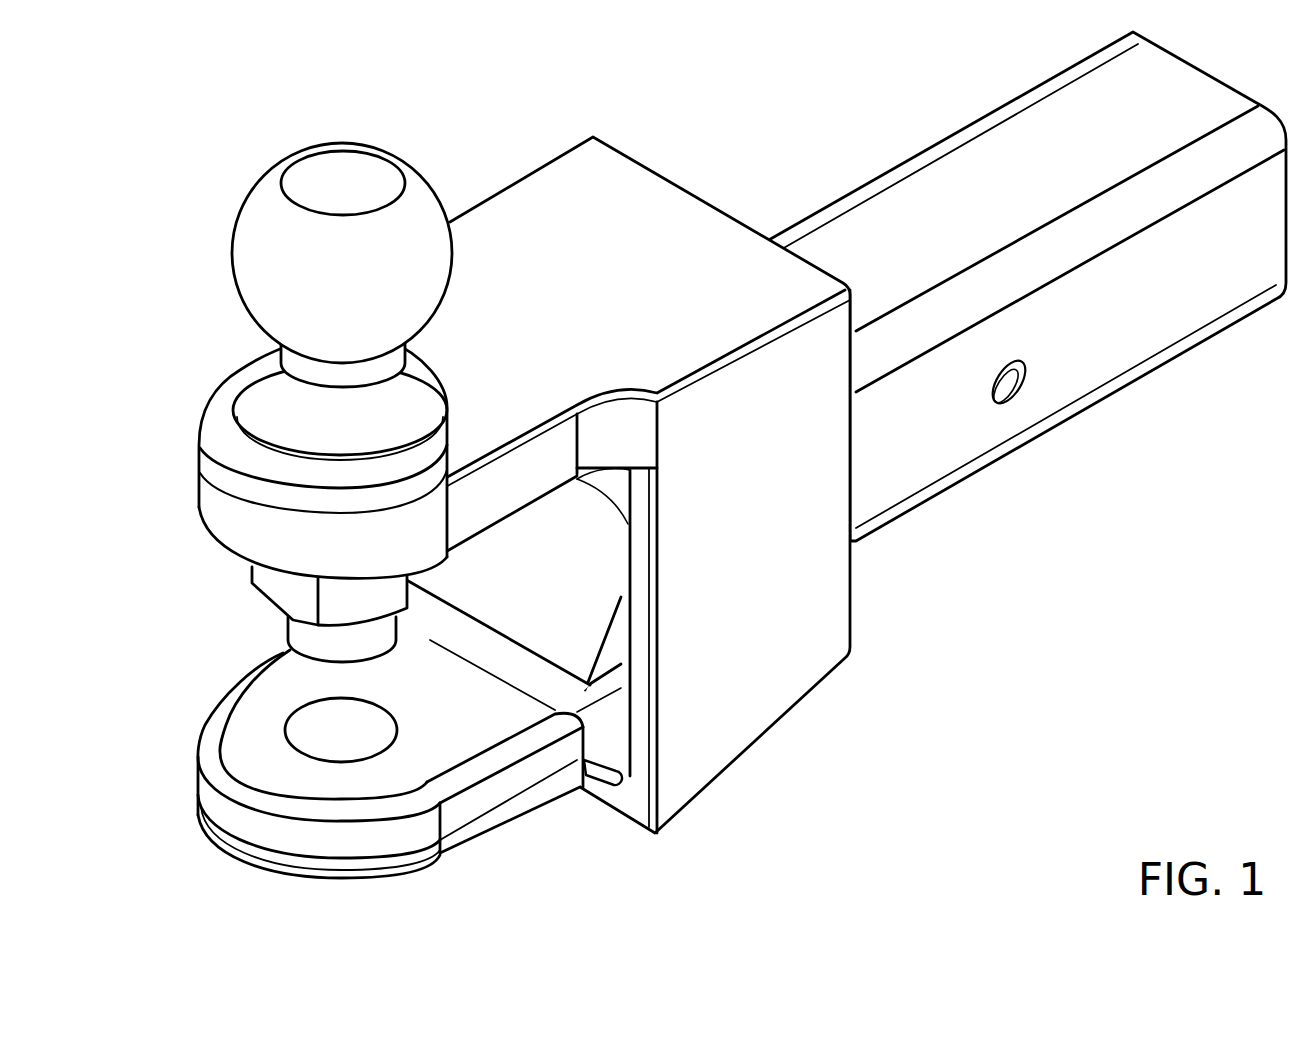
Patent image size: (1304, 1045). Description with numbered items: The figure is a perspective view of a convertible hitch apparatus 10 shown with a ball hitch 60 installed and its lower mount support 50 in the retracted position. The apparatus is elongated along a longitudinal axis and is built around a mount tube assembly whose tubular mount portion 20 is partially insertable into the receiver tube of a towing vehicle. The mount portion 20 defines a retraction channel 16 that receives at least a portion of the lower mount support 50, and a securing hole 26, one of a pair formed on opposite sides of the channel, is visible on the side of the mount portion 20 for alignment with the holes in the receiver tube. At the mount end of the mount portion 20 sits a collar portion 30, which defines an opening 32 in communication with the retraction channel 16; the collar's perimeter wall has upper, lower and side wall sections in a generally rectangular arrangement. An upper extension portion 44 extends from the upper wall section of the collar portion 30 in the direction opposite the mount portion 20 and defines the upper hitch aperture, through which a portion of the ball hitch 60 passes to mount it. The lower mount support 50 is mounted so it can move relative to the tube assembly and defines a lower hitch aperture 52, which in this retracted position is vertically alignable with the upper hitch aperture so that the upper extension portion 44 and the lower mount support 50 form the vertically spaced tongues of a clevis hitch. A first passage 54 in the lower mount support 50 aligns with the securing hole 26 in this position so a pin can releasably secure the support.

The convertible hitch apparatus 10 is at (266, 104).
The retraction channel 16 is at (582, 556).
The mount portion 20 is at (1026, 286).
The securing hole 26 is at (1030, 395).
The collar portion 30 is at (802, 736).
The opening 32 is at (600, 784).
The upper extension portion 44 is at (228, 506).
The lower mount support 50 is at (384, 767).
The lower hitch aperture 52 is at (290, 752).
The first passage 54 is at (1024, 366).
The ball hitch 60 is at (431, 154).